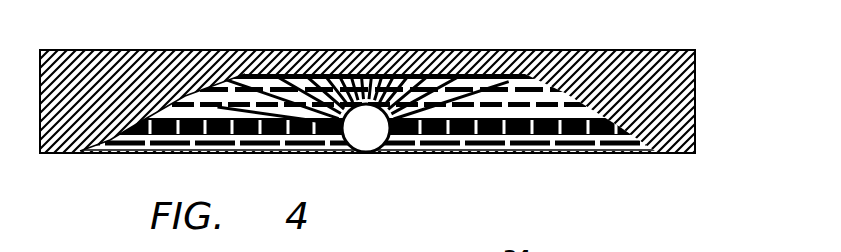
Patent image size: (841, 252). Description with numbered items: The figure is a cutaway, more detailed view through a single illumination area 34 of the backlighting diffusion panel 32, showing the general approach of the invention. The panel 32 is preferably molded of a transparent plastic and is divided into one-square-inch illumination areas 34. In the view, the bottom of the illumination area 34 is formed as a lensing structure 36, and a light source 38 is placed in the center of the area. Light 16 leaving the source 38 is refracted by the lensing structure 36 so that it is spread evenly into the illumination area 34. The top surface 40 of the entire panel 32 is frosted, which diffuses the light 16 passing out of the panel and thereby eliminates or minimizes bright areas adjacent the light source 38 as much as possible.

The top surface 40 is at (637, 51).
The backlighting diffusion panel 32 is at (697, 123).
The illumination area 34 is at (656, 160).
The lensing structure 36 is at (477, 146).
The light source 38 is at (364, 128).
The light 16 is at (200, 118).